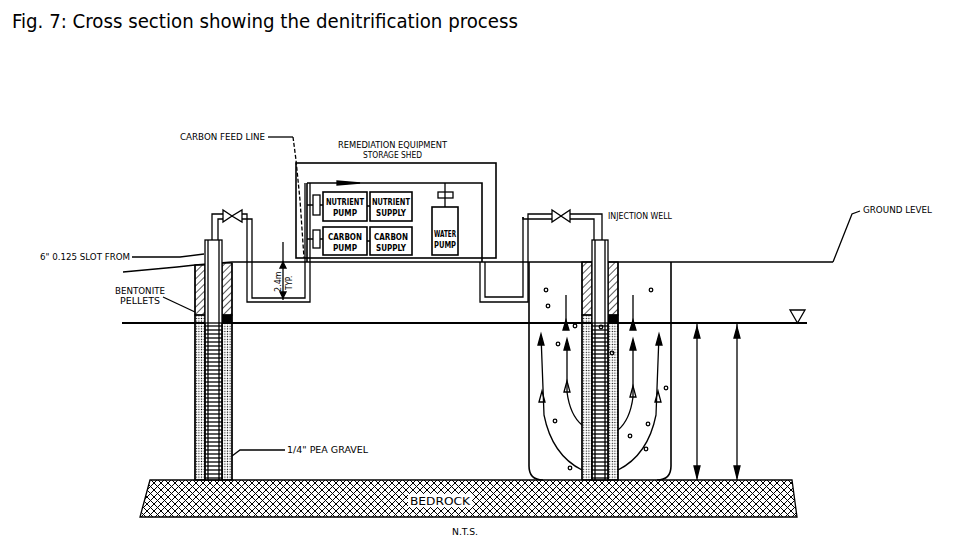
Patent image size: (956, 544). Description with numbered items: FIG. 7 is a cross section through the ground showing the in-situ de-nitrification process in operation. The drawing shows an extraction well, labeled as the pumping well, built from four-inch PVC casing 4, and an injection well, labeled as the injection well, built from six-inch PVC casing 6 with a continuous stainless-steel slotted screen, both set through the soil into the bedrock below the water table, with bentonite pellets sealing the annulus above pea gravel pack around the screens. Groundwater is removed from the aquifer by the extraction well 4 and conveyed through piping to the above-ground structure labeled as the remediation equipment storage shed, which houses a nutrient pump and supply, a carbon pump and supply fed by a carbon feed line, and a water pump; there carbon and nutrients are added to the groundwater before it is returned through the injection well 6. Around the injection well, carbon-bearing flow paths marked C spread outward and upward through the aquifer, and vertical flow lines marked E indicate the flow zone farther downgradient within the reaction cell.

The 4 inch PVC pumping well 4 is at (226, 344).
The 6 inch PVC injection well with continuous SS slot screen 6 is at (613, 258).
The carbon/nutrient flow path in groundwater C is at (600, 372).
The groundwater flow zone E is at (713, 401).